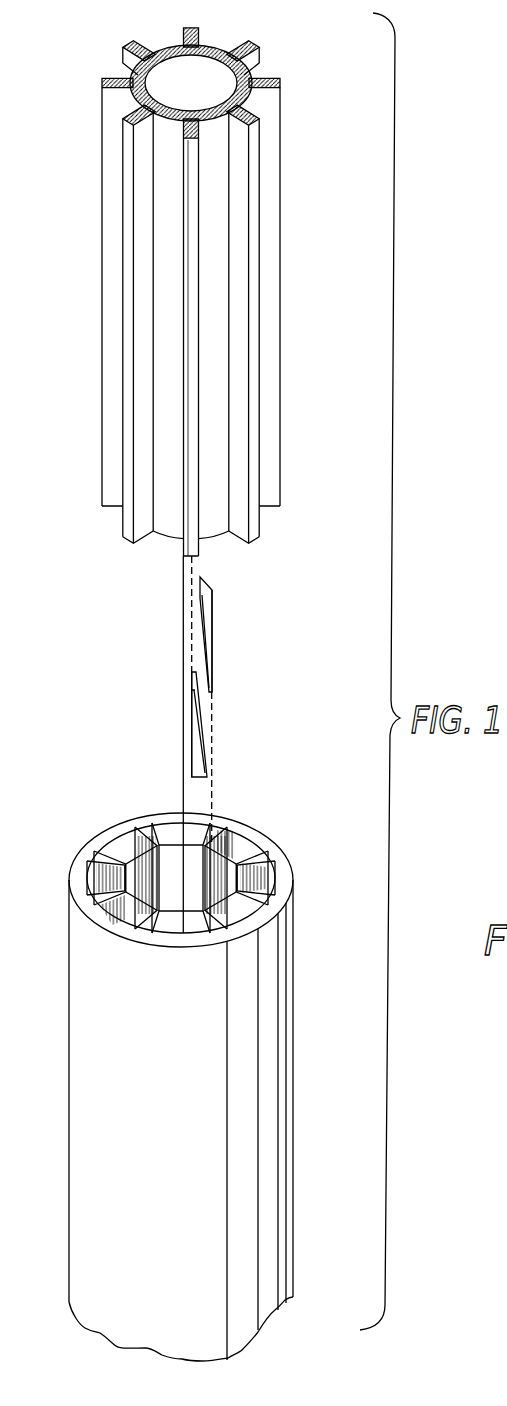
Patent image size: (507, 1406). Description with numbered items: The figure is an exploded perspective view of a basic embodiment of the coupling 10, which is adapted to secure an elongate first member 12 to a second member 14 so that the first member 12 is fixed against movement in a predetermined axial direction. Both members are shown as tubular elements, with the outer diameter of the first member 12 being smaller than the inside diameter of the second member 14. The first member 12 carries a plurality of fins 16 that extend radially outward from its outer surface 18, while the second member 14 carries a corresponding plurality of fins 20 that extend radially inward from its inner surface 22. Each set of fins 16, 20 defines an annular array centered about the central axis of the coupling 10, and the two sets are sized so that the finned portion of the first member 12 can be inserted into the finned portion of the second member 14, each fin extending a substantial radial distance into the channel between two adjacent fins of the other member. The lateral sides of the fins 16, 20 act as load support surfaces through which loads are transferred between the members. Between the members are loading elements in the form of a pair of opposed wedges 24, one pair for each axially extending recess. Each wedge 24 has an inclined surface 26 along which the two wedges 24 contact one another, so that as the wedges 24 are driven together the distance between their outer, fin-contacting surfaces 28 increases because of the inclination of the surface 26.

The coupling 10 is at (305, 557).
The first member 12 is at (208, 47).
The second member 14 is at (285, 990).
The fins 16 is at (274, 115).
The outer surface 18 is at (168, 523).
The fins 20 is at (252, 860).
The inner surface 22 is at (240, 842).
The wedges 24 is at (211, 602).
The inclined surface 26 is at (203, 632).
The fin-contacting surfaces 28 is at (217, 641).